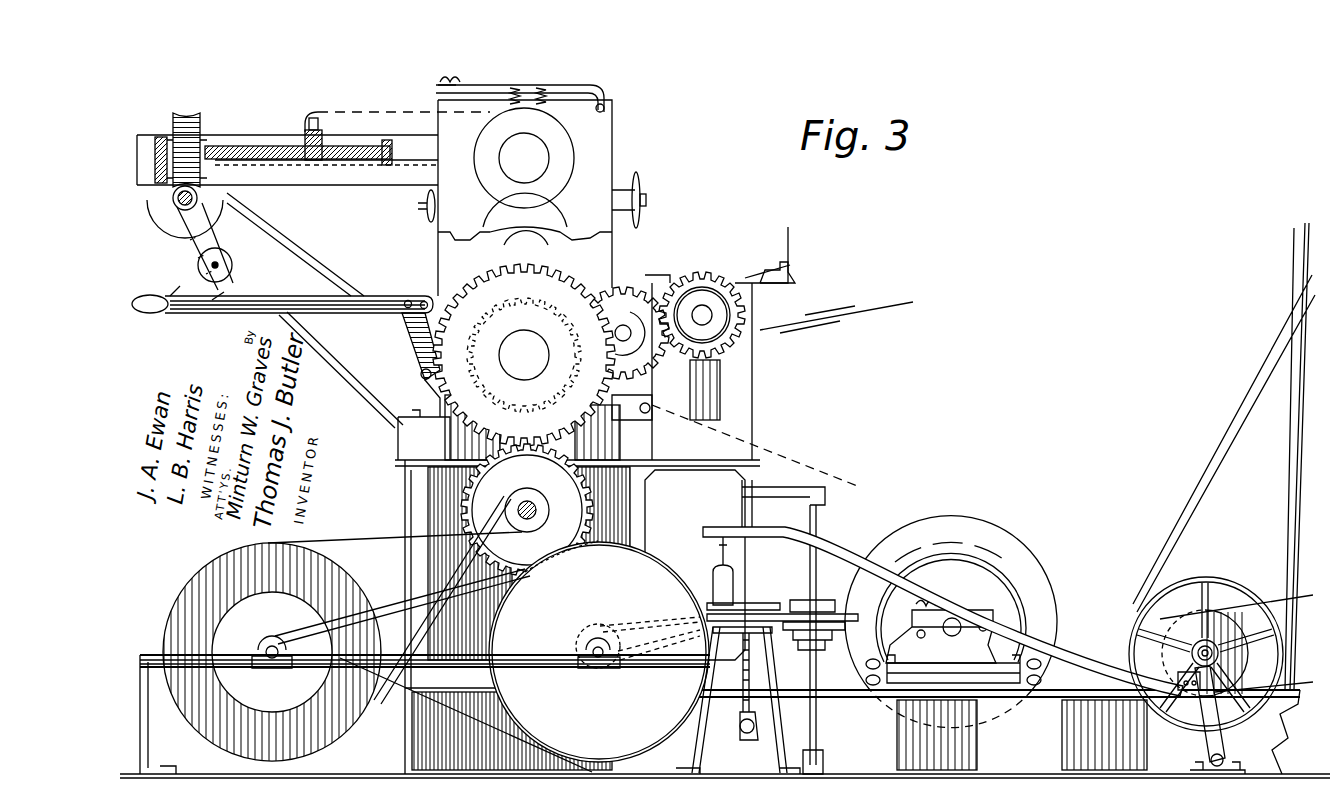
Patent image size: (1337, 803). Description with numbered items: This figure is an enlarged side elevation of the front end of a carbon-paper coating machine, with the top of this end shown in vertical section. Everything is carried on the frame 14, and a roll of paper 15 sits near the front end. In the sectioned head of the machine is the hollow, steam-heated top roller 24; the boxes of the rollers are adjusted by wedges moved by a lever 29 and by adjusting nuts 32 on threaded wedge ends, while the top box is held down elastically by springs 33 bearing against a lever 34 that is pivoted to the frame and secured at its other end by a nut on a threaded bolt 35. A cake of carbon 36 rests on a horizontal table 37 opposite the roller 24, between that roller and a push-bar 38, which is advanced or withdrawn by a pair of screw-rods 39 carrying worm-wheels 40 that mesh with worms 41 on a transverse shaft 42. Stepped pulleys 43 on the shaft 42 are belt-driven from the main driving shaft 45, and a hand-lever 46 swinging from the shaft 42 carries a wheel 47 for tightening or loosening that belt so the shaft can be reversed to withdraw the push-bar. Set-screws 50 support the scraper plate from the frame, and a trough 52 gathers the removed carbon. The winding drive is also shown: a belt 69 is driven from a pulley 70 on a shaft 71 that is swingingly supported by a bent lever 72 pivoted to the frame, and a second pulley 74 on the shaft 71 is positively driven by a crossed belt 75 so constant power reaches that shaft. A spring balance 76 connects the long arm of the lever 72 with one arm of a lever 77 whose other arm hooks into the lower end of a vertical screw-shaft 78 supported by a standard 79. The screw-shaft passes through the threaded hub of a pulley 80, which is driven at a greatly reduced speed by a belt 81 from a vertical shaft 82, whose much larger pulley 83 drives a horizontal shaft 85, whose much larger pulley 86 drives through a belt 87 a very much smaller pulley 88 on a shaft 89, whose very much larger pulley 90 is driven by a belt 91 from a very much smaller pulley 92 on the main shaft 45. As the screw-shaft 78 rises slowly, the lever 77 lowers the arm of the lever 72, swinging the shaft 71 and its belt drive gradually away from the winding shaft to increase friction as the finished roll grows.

The frame 14 is at (428, 482).
The roll of paper 15 is at (1010, 562).
The roller 24 is at (560, 178).
The lever 29 is at (332, 313).
The adjusting nut 32 is at (642, 208).
The spring 33 is at (538, 86).
The lever 34 is at (582, 85).
The threaded bolt 35 is at (445, 78).
The cake of carbon 36 is at (376, 112).
The table 37 is at (332, 165).
The push-bar 38 is at (305, 140).
The screw-rod 39 is at (228, 146).
The worm-wheel 40 is at (185, 112).
The worm 41 is at (174, 202).
The transverse shaft 42 is at (178, 210).
The stepped pulley 43 is at (182, 240).
The shaft 45 is at (537, 508).
The lever 46 is at (205, 284).
The wheel 47 is at (228, 262).
The set-screw 50 is at (760, 275).
The trough 52 is at (790, 255).
The belt 69 is at (1270, 602).
The pulley 70 is at (1212, 610).
The shaft 71 is at (1192, 655).
The bent lever 72 is at (852, 552).
The pulley 74 is at (1198, 577).
The crossed belt 75 is at (1226, 456).
The spring balance 76 is at (713, 582).
The lever 77 is at (748, 698).
The screw-shaft 78 is at (748, 590).
The standard 79 is at (760, 728).
The pulley 80 is at (760, 602).
The belt 81 is at (778, 614).
The vertical shaft 82 is at (825, 600).
The pulley 83 is at (840, 640).
The horizontal shaft 85 is at (594, 664).
The pulley 86 is at (645, 565).
The belt 87 is at (405, 612).
The pulley 88 is at (270, 638).
The shaft 89 is at (272, 660).
The pulley 90 is at (340, 580).
The belt 91 is at (380, 540).
The pulley 92 is at (527, 488).